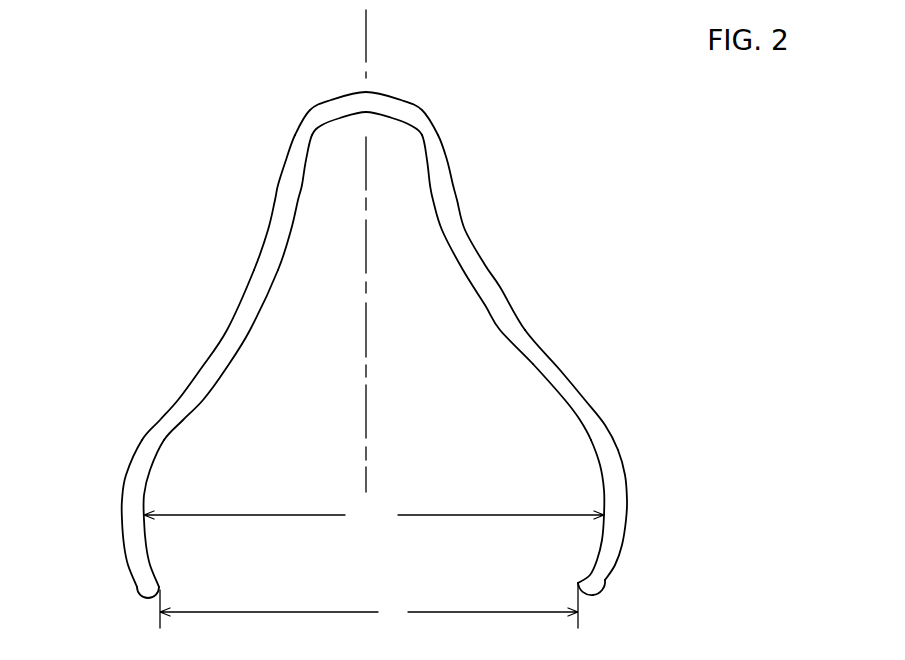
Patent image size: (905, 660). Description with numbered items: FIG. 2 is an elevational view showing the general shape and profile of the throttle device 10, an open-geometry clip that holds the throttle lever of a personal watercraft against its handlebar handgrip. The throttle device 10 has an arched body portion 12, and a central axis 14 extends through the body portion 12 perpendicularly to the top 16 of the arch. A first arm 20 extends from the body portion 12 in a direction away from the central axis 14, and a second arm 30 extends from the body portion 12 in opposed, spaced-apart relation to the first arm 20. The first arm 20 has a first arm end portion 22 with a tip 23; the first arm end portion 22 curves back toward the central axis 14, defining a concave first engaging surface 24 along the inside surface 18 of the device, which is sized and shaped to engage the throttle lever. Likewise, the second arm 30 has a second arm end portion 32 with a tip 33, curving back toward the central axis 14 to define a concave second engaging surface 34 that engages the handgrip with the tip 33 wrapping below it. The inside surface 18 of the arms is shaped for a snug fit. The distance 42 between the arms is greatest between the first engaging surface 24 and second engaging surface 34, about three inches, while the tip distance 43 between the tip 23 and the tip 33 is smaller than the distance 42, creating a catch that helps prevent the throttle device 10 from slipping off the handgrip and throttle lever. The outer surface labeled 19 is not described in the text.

The throttle device 10 is at (150, 117).
The arched body portion 12 is at (290, 160).
The central axis 14 is at (366, 403).
The top 16 is at (367, 91).
The inside surface 18 is at (485, 327).
The outer surface 19 is at (501, 277).
The first arm 20 is at (540, 363).
The first arm end portion 22 is at (620, 500).
The tip 23 is at (597, 592).
The first engaging surface 24 is at (593, 491).
The second arm 30 is at (247, 312).
The second arm end portion 32 is at (127, 498).
The tip 33 is at (145, 595).
The second engaging surface 34 is at (155, 484).
The distance 42 is at (374, 518).
The tip distance 43 is at (369, 605).